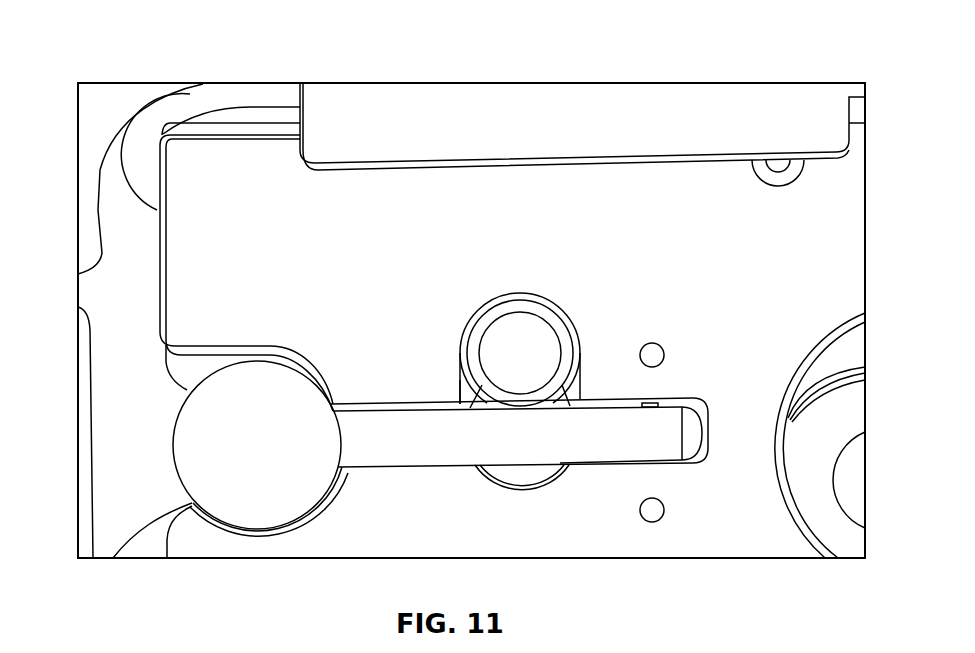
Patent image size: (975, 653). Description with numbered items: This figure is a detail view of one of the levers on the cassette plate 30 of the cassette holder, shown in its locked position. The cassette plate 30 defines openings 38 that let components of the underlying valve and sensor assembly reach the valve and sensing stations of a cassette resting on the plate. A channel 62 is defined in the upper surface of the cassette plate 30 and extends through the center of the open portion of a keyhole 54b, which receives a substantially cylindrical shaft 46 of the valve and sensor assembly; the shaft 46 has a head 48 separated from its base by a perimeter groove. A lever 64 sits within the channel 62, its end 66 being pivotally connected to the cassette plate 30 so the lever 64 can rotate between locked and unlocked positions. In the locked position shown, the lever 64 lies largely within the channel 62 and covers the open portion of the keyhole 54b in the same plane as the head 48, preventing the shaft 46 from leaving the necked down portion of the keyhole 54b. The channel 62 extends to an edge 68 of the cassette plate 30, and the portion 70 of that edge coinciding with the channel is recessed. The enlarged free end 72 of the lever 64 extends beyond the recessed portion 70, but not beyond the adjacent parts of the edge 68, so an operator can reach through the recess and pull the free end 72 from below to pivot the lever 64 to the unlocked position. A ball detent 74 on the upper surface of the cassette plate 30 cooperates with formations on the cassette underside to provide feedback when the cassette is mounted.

The cassette plate 30 is at (868, 216).
The openings 38 is at (796, 520).
The shaft 46 is at (578, 336).
The head 48 is at (527, 330).
The keyhole 54b is at (458, 378).
The channel 62 is at (709, 430).
The lever 64 is at (552, 447).
The end 66 is at (655, 447).
The edge 68 is at (163, 305).
The recessed portion 70 is at (113, 558).
The free end 72 is at (172, 446).
The ball detent 74 is at (795, 167).